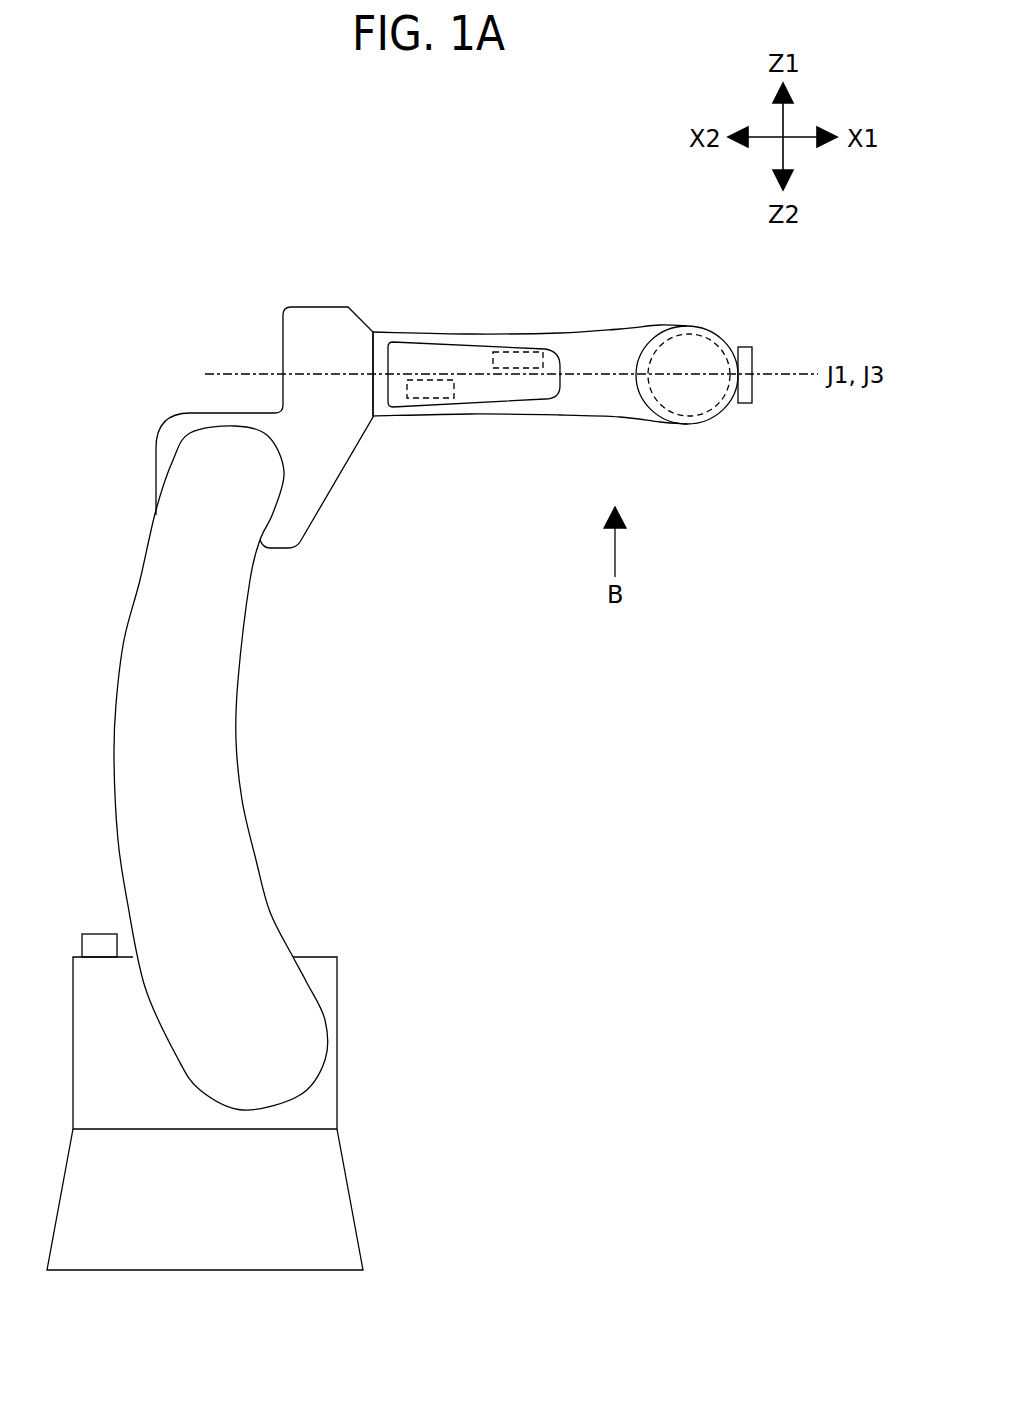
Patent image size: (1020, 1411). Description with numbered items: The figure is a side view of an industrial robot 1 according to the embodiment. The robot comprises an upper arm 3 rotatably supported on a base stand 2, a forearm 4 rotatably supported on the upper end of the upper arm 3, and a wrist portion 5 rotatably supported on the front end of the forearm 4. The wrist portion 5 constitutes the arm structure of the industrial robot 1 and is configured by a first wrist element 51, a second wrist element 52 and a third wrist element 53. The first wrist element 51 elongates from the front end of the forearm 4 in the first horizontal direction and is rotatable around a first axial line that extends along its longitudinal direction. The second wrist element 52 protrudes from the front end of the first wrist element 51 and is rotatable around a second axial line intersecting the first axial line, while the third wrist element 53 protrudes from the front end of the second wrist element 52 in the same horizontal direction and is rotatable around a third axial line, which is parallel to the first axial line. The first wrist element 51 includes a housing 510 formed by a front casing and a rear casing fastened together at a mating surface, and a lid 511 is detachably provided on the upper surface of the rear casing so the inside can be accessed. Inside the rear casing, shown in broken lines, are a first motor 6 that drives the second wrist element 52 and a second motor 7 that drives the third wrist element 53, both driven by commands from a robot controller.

The industrial robot 1 is at (411, 180).
The base stand 2 is at (355, 974).
The upper arm 3 is at (97, 749).
The forearm 4 is at (352, 500).
The wrist portion 5 is at (533, 236).
The first motor 6 is at (428, 400).
The second motor 7 is at (530, 350).
The first wrist element 51 is at (680, 305).
The second wrist element 52 is at (693, 397).
The third wrist element 53 is at (752, 357).
The housing 510 is at (506, 414).
The lid 511 is at (469, 352).